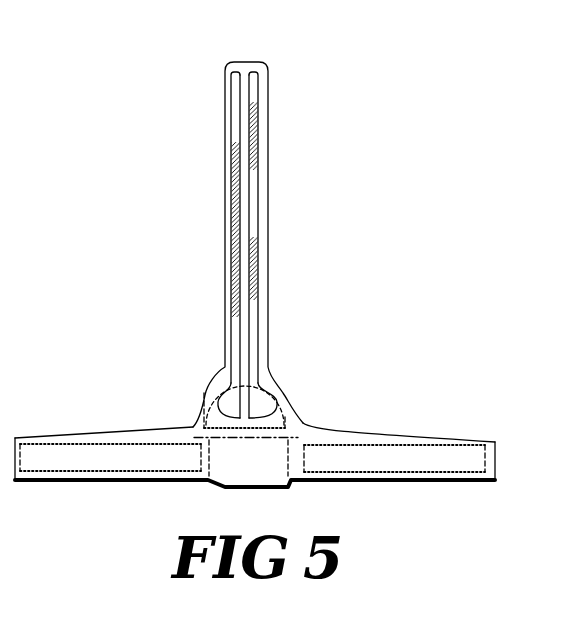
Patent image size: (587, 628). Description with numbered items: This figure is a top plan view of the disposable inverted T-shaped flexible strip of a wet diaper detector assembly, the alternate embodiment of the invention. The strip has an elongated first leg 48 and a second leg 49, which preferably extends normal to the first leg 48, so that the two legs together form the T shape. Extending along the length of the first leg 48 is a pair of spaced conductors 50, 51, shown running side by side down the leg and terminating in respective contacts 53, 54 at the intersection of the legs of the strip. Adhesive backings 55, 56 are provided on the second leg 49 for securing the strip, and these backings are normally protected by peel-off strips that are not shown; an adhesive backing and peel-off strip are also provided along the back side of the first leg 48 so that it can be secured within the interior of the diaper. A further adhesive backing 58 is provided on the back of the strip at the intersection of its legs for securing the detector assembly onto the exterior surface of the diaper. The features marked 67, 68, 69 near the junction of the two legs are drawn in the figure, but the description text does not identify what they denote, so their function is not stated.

The first leg 48 is at (268, 193).
The second leg 49 is at (107, 433).
The conductor 50 is at (237, 88).
The conductor 51 is at (253, 85).
The contact 53 is at (228, 403).
The contact 54 is at (263, 403).
The adhesive backing 55 is at (53, 457).
The adhesive backing 56 is at (432, 465).
The adhesive backing 58 is at (305, 422).
The left rib 67 is at (210, 462).
The center channel 68 is at (242, 440).
The right rib 69 is at (293, 443).